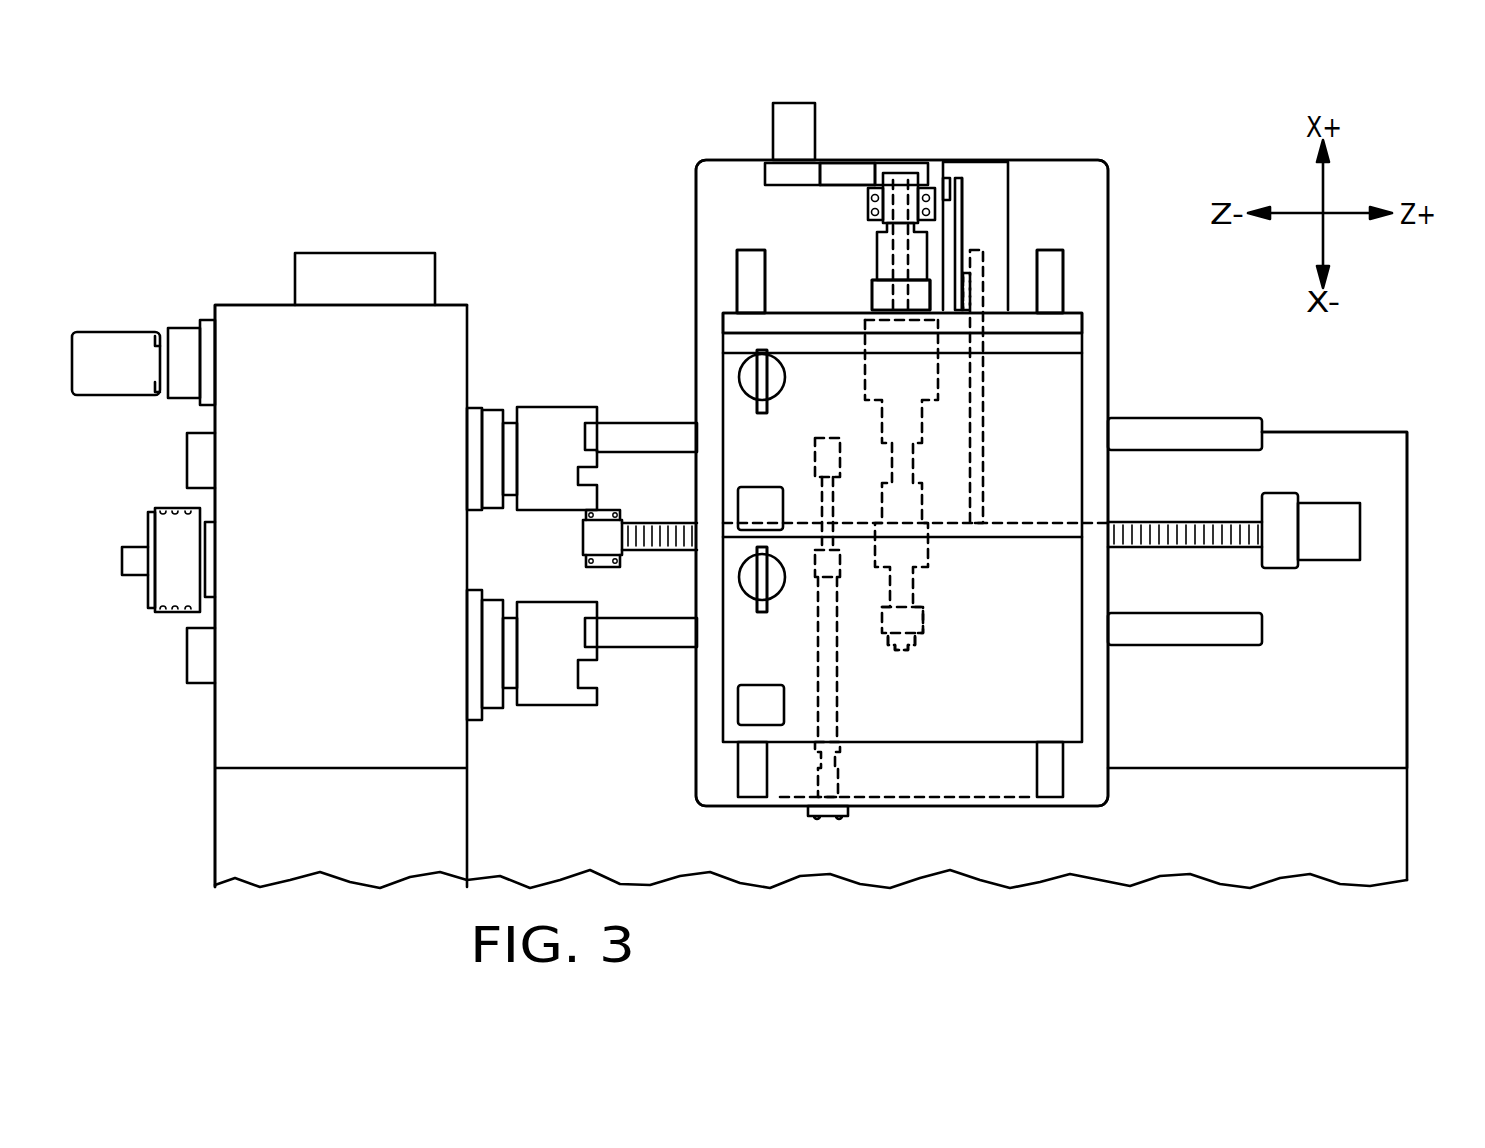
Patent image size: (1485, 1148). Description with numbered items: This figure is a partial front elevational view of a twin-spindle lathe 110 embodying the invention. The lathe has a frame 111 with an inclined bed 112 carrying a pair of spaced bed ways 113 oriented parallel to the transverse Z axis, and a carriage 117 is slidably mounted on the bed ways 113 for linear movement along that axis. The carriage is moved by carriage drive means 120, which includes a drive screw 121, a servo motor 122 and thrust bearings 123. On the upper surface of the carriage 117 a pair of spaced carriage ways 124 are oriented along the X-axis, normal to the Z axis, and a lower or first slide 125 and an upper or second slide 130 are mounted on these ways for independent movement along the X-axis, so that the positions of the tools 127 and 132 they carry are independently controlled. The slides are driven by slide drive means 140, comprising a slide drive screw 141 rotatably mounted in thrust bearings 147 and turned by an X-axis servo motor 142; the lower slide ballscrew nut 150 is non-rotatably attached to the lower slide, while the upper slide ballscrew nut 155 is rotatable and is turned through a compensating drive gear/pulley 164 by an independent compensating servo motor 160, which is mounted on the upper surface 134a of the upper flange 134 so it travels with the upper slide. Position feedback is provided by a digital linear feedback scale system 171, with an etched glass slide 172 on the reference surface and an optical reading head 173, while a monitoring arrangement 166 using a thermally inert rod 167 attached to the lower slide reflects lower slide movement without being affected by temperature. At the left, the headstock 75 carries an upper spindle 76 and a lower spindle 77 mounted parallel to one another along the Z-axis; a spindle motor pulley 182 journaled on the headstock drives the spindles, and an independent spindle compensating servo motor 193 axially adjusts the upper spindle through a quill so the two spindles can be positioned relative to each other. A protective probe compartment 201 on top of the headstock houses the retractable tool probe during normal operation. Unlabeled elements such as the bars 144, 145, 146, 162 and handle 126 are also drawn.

The headstock 75 is at (383, 745).
The upper spindle 76 is at (524, 425).
The lower spindle 77 is at (530, 688).
The twin-spindle lathe 110 is at (432, 216).
The frame 111 is at (1303, 838).
The inclined bed 112 is at (1296, 714).
The bed ways 113 is at (660, 437).
The carriage 117 is at (1097, 163).
The carriage drive means 120 is at (1318, 552).
The drive screw 121 is at (1210, 548).
The servo motor 122 is at (1348, 517).
The thrust bearings 123 is at (590, 566).
The carriage ways 124 is at (750, 780).
The lower slide 125 is at (1032, 706).
The lower clamping handle 126 is at (742, 575).
The tool 127 is at (758, 612).
The upper slide 130 is at (738, 378).
The tool 132 is at (760, 413).
The upper flange 134 is at (735, 326).
The upper surface of flange 134a is at (778, 312).
The slide drive means 140 is at (767, 154).
The slide drive screw 141 is at (913, 580).
The X-axis servo motor 142 is at (795, 103).
The tool head bar 144 is at (765, 180).
The bar section 145 is at (832, 172).
The tool spindle column 146 is at (908, 160).
The thrust bearings 147 is at (870, 222).
The lower slide ballscrew nut 150 is at (920, 560).
The upper slide ballscrew nut 155 is at (865, 405).
The independent compensating servo motor 160 is at (868, 203).
The spindle base 162 is at (868, 306).
The compensating drive gear/pulley 164 is at (868, 306).
The monitoring arrangement 166 is at (988, 290).
The thermally inert rod 167 is at (985, 250).
The digital linear feedback scale system 171 is at (974, 236).
The etched glass slide 172 is at (963, 207).
The optical reading head 173 is at (938, 185).
The spindle motor pulley 182 is at (170, 534).
The spindle compensating servo motor 193 is at (112, 340).
The probe compartment 201 is at (350, 278).